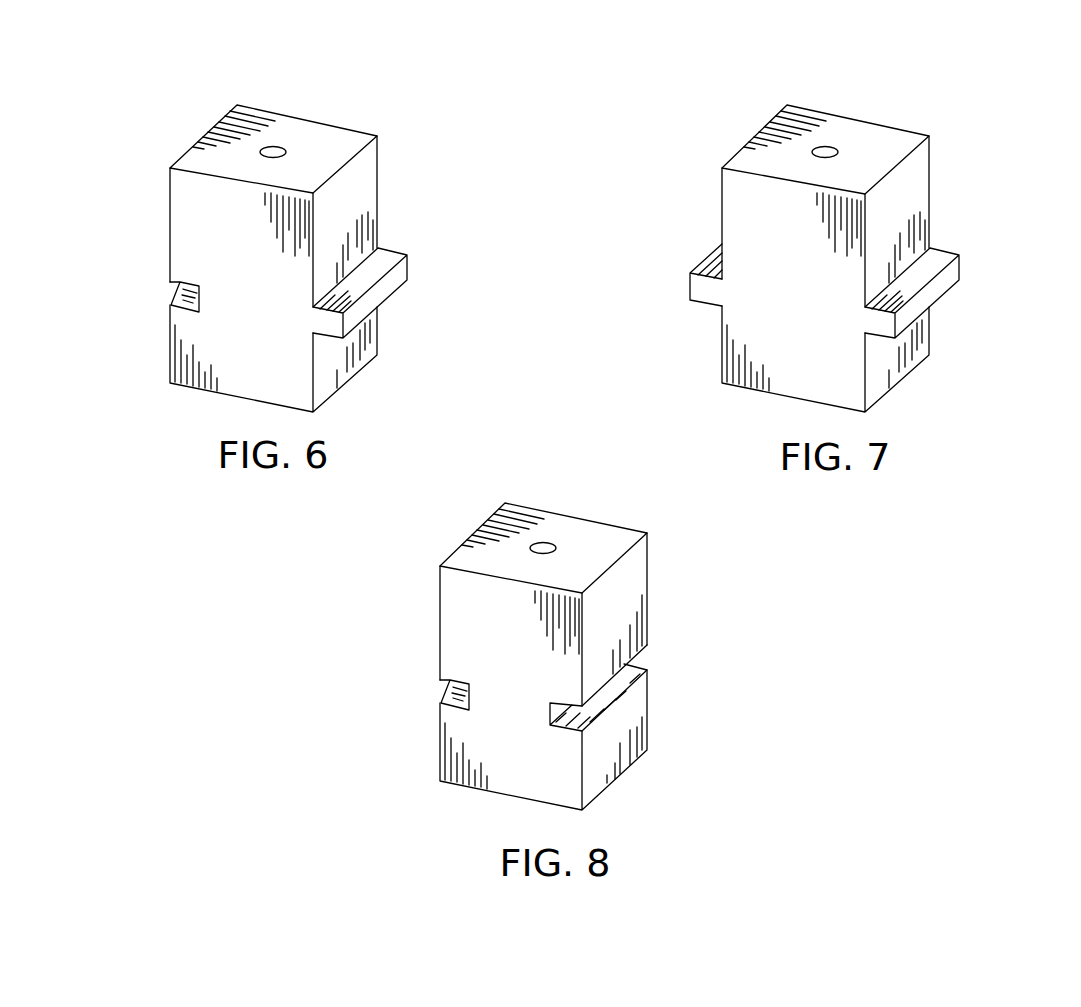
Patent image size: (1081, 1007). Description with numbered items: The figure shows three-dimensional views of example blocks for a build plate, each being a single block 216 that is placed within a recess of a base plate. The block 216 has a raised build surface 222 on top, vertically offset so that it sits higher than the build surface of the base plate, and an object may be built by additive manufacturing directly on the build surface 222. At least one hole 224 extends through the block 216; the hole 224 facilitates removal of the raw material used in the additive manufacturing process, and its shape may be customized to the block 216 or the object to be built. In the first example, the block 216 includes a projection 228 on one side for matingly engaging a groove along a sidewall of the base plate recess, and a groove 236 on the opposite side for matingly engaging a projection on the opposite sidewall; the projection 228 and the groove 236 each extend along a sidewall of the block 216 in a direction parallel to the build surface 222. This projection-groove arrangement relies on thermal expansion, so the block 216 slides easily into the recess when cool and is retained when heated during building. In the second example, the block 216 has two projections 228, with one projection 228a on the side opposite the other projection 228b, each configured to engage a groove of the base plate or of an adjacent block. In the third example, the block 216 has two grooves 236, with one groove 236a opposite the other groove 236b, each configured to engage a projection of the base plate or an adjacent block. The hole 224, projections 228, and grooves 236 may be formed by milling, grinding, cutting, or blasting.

In FIG. 6, the block 216 is at (317, 107).
In FIG. 7, the block 216 is at (887, 102).
In FIG. 8, the block 216 is at (609, 507).
In FIG. 6, the build surface 222 is at (223, 152).
In FIG. 7, the build surface 222 is at (775, 152).
In FIG. 8, the build surface 222 is at (505, 551).
In FIG. 6, the hole 224 is at (275, 150).
In FIG. 7, the hole 224 is at (827, 150).
In FIG. 8, the hole 224 is at (543, 547).
In FIG. 6, the projection 228 is at (381, 289).
In FIG. 7, the projection 228 is at (828, 274).
In FIG. 7, the projection 228a is at (709, 264).
In FIG. 7, the projection 228b is at (946, 284).
In FIG. 6, the groove 236 is at (178, 288).
In FIG. 8, the groove 236 is at (545, 687).
In FIG. 8, the groove 236a is at (444, 687).
In FIG. 8, the groove 236b is at (643, 654).